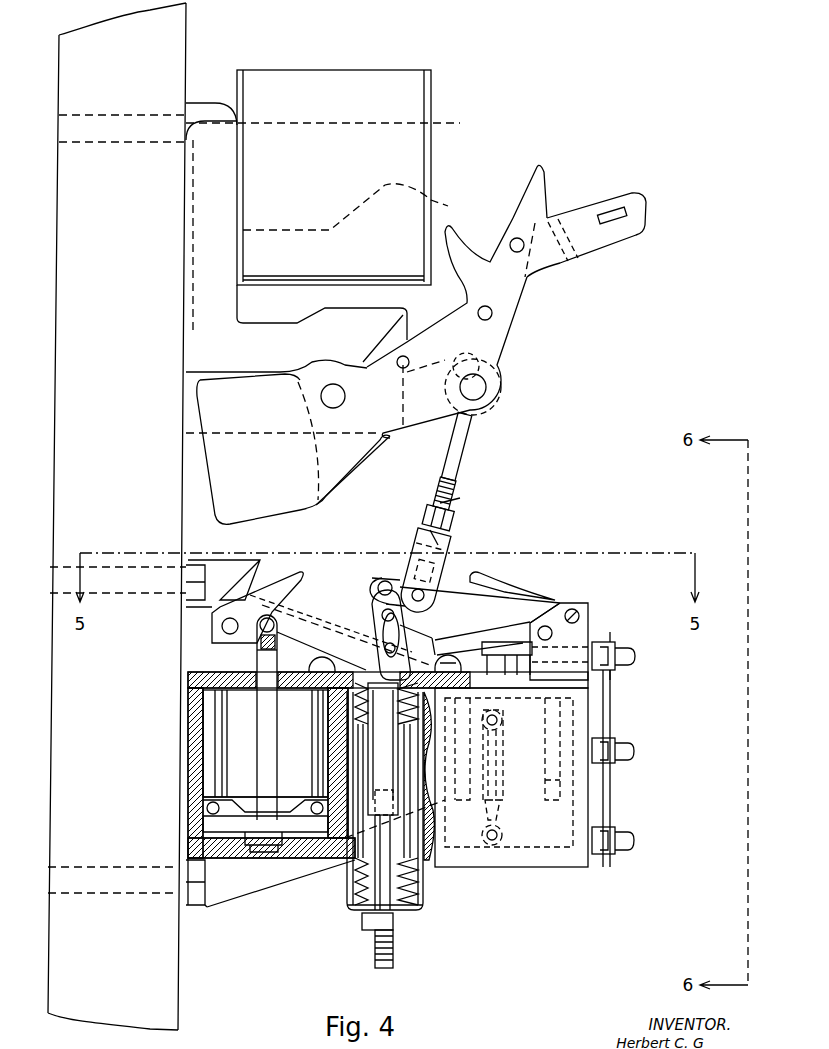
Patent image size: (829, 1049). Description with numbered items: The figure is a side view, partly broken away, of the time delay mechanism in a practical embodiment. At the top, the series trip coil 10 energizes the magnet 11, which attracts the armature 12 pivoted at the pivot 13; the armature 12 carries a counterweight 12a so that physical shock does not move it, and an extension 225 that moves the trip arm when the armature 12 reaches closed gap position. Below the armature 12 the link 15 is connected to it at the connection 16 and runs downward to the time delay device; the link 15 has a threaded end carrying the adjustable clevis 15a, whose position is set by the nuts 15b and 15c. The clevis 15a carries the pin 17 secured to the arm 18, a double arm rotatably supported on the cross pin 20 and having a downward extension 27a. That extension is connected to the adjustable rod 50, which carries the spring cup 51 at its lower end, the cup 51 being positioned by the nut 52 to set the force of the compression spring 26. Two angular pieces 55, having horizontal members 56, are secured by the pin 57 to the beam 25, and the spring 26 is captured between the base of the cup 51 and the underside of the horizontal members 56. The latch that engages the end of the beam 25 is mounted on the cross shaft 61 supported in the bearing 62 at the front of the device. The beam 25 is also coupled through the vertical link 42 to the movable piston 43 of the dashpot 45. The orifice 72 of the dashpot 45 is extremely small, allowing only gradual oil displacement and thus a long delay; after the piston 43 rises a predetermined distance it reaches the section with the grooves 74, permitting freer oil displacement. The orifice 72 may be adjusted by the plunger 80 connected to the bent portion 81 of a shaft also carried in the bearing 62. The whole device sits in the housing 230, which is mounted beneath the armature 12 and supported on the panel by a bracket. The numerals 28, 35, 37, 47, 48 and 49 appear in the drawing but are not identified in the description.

The series trip coil 10 is at (390, 92).
The magnet 11 is at (470, 136).
The armature 12 is at (505, 304).
The counterweight 12a is at (288, 449).
The pivot 13 is at (336, 402).
The link 15 is at (462, 446).
The adjustable clevis 15a is at (434, 590).
The nut 15b is at (458, 510).
The nut 15c is at (432, 552).
The connection 16 is at (480, 388).
The pin 17 is at (504, 566).
The arm 18 is at (505, 588).
The cross pin 20 is at (565, 603).
The beam 25 is at (318, 610).
The spring 26 is at (360, 880).
The downward extension 27a is at (385, 602).
The stop 28 is at (520, 580).
The latch plate 35 is at (284, 606).
The support bracket 37 is at (262, 600).
The vertical link 42 is at (520, 718).
The movable piston 43 is at (540, 823).
The dashpot 45 is at (575, 796).
The coil 47 is at (262, 728).
The coil end plate 48 is at (215, 795).
The base plate 49 is at (212, 830).
The adjustable rod 50 is at (383, 773).
The spring cup 51 is at (424, 908).
The nut 52 is at (396, 925).
The angular piece 55 is at (262, 656).
The horizontal member 56 is at (368, 668).
The pin 57 is at (390, 642).
The cross shaft 61 is at (553, 634).
The bearing 62 is at (580, 613).
The orifice 72 is at (494, 842).
The grooves 74 is at (545, 778).
The plunger 80 is at (494, 780).
The bent portion 81 is at (498, 652).
The extension 225 is at (585, 218).
The housing 230 is at (216, 860).